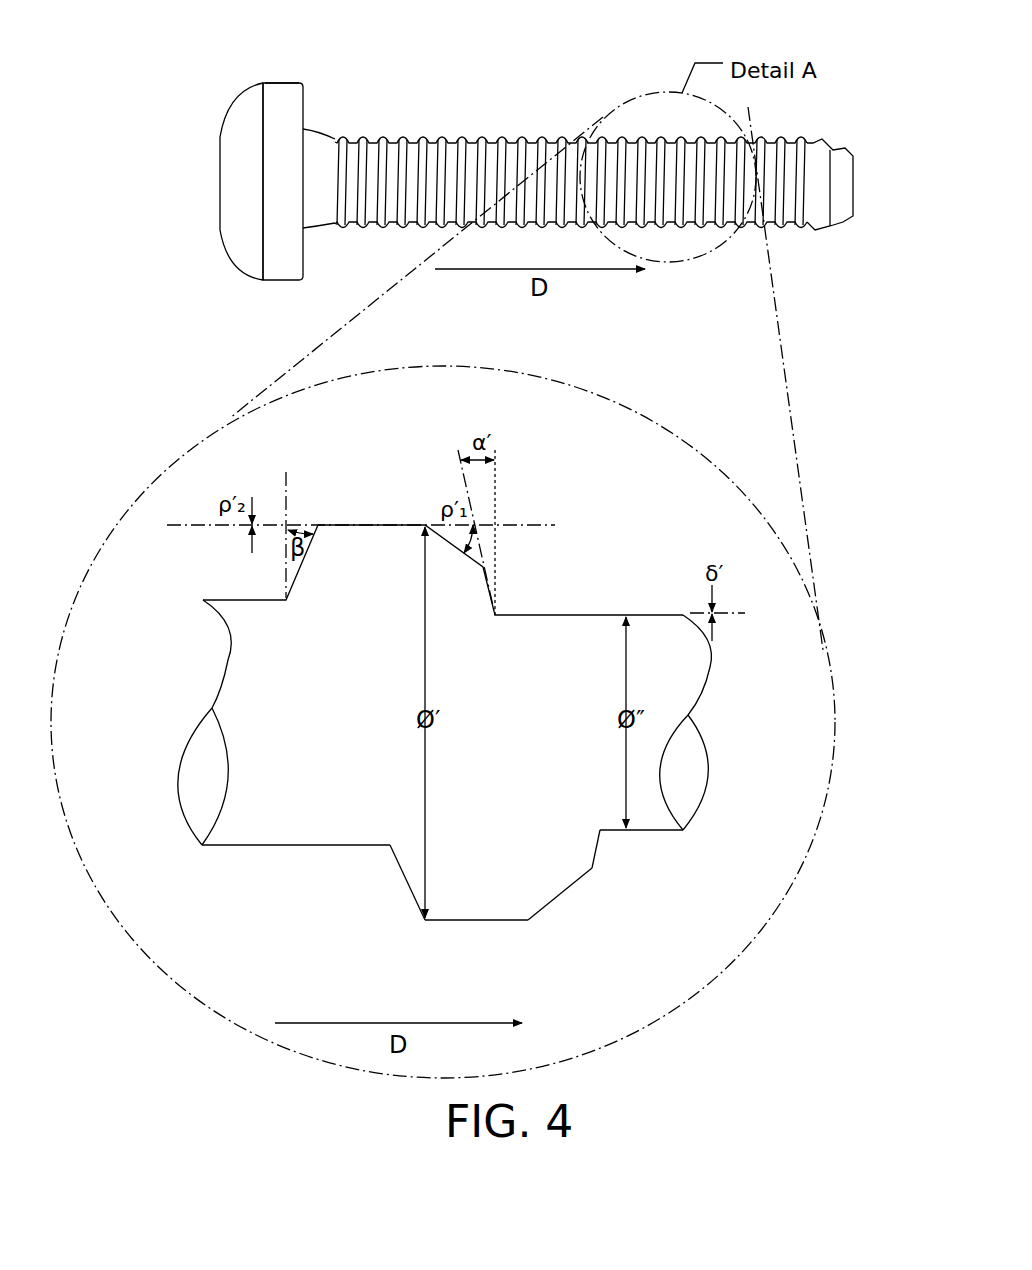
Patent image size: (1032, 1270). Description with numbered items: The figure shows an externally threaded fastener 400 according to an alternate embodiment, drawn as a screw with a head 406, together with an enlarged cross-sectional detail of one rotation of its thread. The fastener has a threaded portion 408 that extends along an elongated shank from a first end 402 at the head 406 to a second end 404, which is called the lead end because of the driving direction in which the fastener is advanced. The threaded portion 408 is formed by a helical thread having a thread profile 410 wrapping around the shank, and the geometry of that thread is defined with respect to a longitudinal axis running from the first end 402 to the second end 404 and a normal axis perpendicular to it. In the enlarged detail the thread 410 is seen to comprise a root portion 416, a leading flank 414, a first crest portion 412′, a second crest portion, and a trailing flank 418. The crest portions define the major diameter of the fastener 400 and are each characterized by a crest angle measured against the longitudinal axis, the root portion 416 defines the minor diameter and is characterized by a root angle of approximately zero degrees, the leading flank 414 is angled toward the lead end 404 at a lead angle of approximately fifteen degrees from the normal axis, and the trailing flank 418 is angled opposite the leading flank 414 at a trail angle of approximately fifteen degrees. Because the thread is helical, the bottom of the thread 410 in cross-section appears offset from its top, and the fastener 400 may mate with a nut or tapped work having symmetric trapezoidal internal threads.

The externally threaded fastener 400 is at (200, 137).
The first end 402 is at (226, 266).
The second end 404 is at (853, 241).
The head 406 is at (280, 82).
The threaded portion 408 is at (467, 136).
The thread profile 410 is at (668, 844).
The first crest portion 412′ is at (555, 898).
The leading flank portion 414 is at (595, 868).
The root portion 416 is at (228, 848).
The trailing flank portion 418 is at (405, 886).